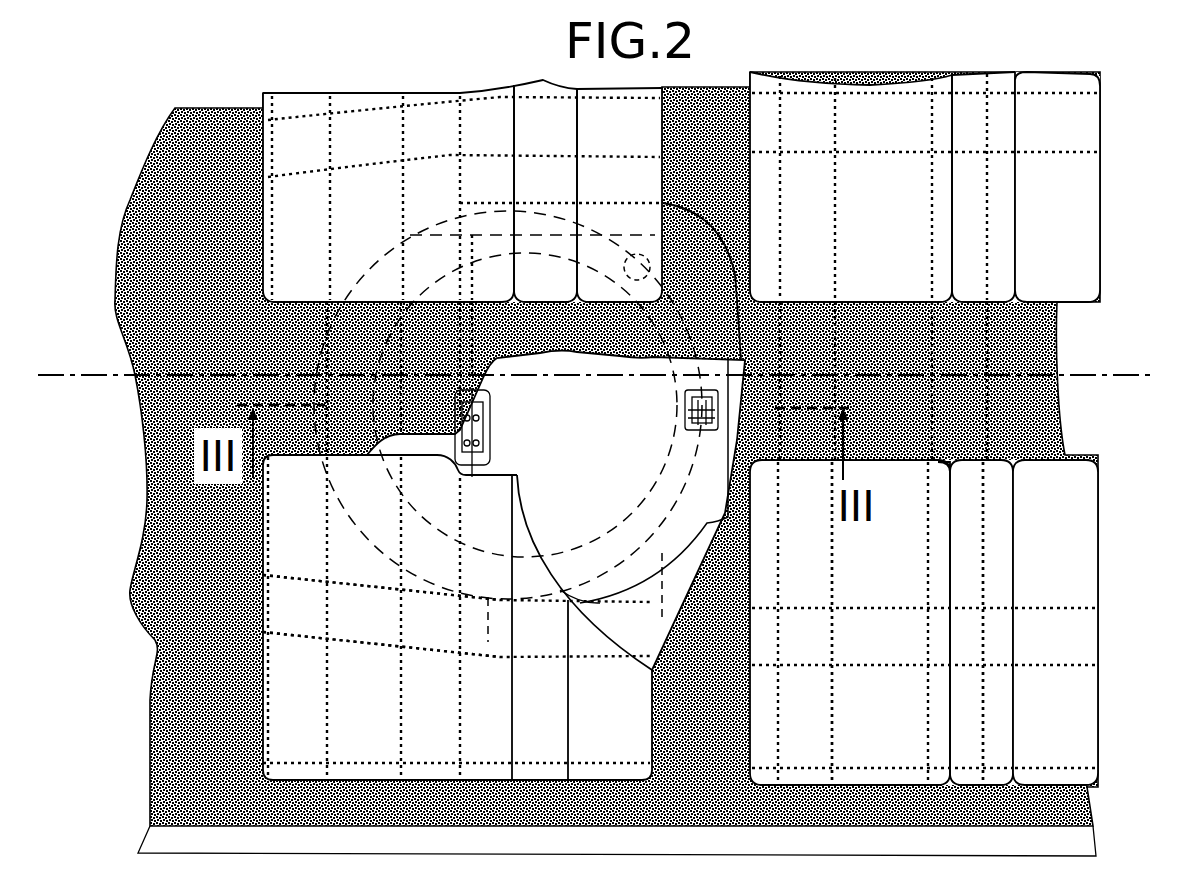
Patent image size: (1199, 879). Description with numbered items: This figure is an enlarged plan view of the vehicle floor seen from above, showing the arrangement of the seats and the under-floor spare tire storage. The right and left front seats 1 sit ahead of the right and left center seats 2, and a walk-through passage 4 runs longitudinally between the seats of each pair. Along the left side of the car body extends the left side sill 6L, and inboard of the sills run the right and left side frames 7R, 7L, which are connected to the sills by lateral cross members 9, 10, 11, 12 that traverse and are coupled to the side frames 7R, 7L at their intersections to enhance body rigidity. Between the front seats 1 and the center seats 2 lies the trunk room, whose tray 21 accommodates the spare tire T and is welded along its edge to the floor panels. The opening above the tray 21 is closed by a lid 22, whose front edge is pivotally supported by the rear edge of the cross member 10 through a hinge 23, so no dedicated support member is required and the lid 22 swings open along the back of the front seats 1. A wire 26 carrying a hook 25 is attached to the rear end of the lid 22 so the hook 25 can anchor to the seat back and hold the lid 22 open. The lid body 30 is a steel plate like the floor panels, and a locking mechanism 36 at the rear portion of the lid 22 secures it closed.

The front seat 1 is at (366, 208).
The center seat 2 is at (869, 218).
The walk-through passage 4 is at (270, 338).
The left side sill 6L is at (1080, 850).
The right side frame 7R is at (1073, 153).
The left side frame 7L is at (1062, 605).
The cross member 9 is at (330, 678).
The cross member 10 is at (397, 660).
The cross member 11 is at (834, 712).
The cross member 12 is at (983, 715).
The tray 21 is at (654, 505).
The lid 22 is at (616, 615).
The hinge 23 is at (480, 428).
The hook 25 is at (508, 405).
The wire 26 is at (637, 282).
The lid body 30 is at (597, 607).
The locking mechanism 36 is at (675, 418).
The spare tire T is at (486, 652).